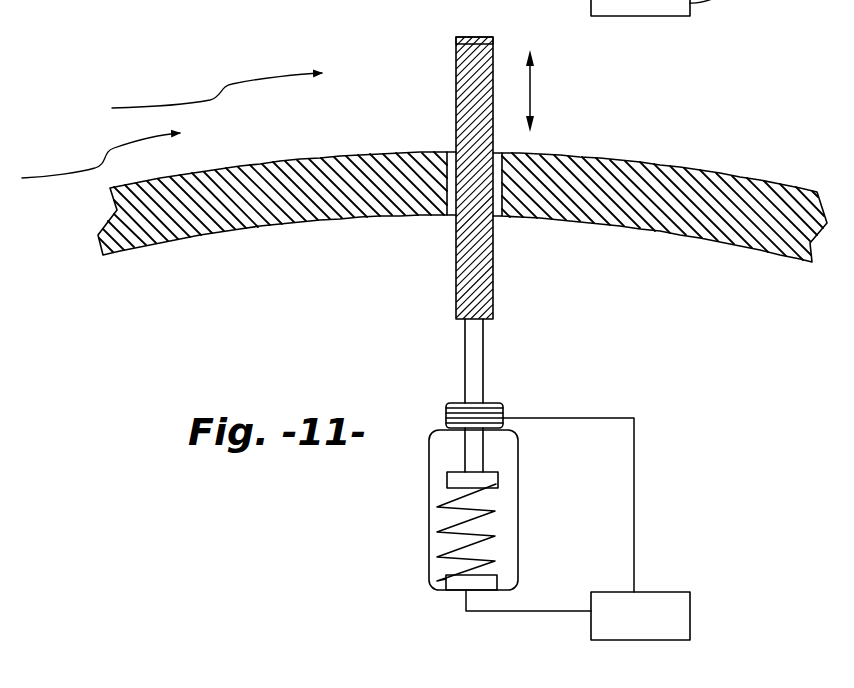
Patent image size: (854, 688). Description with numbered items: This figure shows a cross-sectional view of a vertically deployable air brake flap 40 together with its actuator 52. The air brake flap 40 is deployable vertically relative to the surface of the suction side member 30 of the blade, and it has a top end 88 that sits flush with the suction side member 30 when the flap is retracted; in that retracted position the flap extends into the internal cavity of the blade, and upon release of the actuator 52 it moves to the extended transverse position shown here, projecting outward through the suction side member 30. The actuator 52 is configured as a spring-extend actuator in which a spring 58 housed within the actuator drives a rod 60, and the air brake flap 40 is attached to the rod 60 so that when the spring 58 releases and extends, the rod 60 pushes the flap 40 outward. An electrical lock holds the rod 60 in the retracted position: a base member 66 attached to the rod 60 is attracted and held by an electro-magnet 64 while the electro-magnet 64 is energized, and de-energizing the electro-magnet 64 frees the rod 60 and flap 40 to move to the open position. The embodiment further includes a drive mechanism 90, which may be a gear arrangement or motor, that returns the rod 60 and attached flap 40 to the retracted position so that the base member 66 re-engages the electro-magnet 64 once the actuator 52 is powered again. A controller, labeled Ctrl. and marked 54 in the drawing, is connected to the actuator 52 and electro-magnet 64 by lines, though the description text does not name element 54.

The suction side member 30 is at (798, 190).
The air brake flap 40 is at (456, 103).
The top end 88 is at (456, 37).
The rod 60 is at (484, 375).
The drive mechanism 90 is at (447, 418).
The spring 58 is at (440, 531).
The base member 66 is at (497, 487).
The electro-magnet 64 is at (447, 585).
The controller 54 is at (690, 612).
The actuator 52 is at (618, 346).